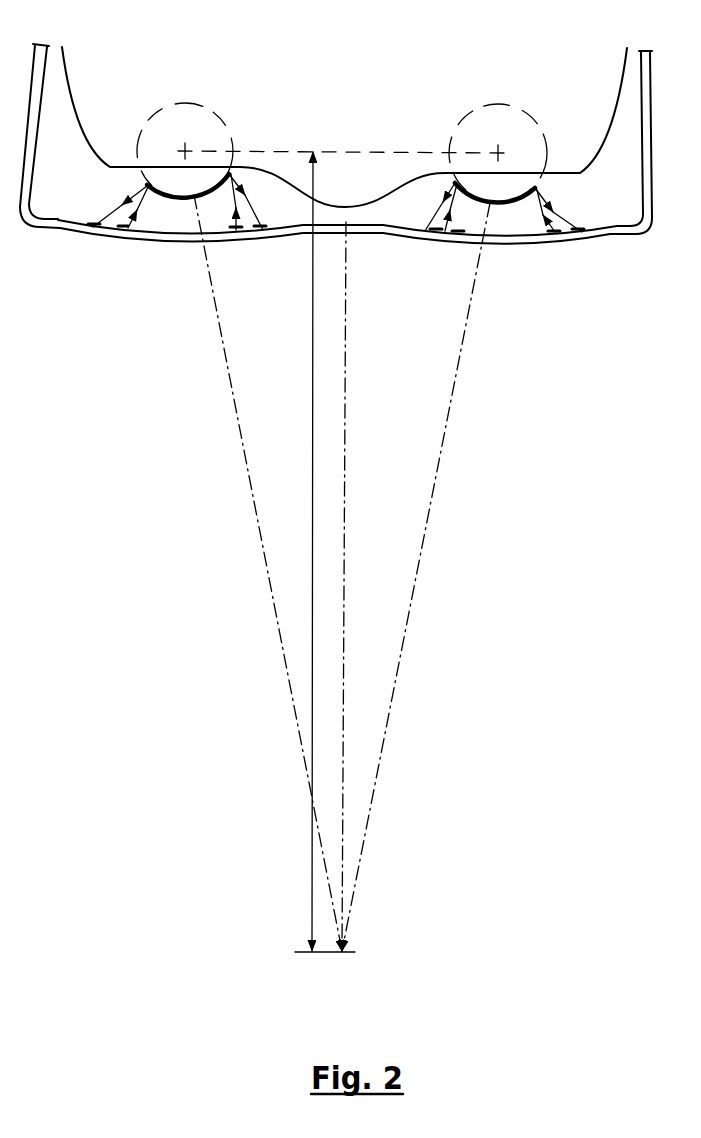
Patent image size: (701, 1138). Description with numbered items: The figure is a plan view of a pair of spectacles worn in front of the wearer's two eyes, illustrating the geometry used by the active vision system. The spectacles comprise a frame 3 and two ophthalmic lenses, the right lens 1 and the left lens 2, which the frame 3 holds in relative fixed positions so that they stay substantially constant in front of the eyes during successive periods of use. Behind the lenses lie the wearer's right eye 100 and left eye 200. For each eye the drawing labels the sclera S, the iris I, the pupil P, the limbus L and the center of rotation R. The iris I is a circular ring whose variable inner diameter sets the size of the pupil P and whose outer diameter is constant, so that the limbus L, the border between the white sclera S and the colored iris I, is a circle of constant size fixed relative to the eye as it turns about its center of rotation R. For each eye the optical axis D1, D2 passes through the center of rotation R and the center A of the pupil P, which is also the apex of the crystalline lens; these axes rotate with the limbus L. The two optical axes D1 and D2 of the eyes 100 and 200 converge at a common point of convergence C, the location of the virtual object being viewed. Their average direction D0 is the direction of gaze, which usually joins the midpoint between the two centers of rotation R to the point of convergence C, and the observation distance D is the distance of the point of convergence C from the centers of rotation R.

The right ophthalmic lens 1 is at (75, 228).
The left ophthalmic lens 2 is at (612, 229).
The frame 3 is at (31, 151).
The right eye 100 is at (83, 60).
The left eye 200 is at (420, 61).
The limbus L is at (146, 186).
The sclera S is at (150, 180).
The iris I is at (164, 187).
The pupil P is at (195, 191).
The center of rotation of the eye R is at (342, 152).
The center of the pupil A is at (197, 193).
The observation distance D is at (313, 447).
The optical axis of the right eye D1 is at (258, 525).
The direction of gaze D0 is at (347, 553).
The optical axis of the left eye D2 is at (422, 558).
The point of convergence C is at (377, 937).